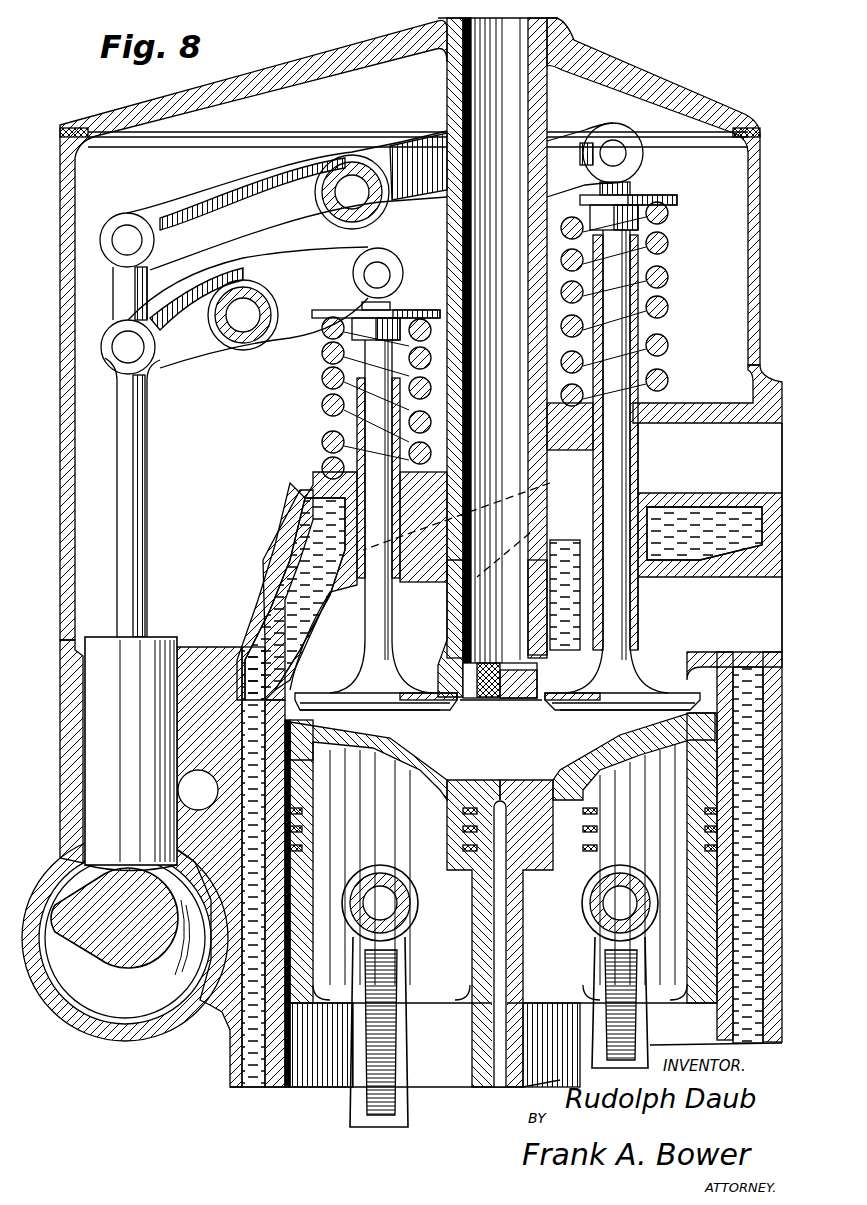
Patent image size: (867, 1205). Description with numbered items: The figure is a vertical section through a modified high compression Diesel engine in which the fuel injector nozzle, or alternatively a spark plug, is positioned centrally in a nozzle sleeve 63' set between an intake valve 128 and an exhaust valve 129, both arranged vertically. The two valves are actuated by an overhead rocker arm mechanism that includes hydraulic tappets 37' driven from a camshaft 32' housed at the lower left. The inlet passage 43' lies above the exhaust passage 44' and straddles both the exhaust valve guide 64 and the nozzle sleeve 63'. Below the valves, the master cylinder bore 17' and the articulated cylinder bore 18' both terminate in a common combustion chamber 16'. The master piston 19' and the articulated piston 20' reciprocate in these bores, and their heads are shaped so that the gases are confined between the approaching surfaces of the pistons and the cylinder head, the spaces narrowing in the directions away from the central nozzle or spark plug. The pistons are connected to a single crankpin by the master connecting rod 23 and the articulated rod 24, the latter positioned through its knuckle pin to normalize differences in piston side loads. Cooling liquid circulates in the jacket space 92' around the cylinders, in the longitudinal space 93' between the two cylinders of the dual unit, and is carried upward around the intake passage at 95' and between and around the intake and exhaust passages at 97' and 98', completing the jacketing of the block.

The combustion chamber 16' is at (503, 858).
The master cylinder bore 17' is at (288, 815).
The articulated cylinder bore 18' is at (509, 933).
The master piston 19' is at (373, 866).
The articulated piston 20' is at (637, 862).
The master connecting rod 23 is at (390, 1062).
The articulated rod 24 is at (633, 1033).
The camshaft 32' is at (120, 970).
The hydraulic tappets 37' is at (100, 614).
The inlet passage 43' is at (710, 458).
The exhaust passage 44' is at (710, 614).
The nozzle sleeve 63' is at (473, 376).
The exhaust valve guide 64 is at (637, 468).
The cooling jacket space 92' is at (488, 867).
The longitudinal space 93' is at (492, 962).
The jacket extension around intake passage 95' is at (297, 586).
The central cooling circulation 97' is at (710, 535).
The cooling circulation around exhaust 98' is at (575, 595).
The intake valve 128 is at (390, 637).
The exhaust valve 129 is at (620, 623).